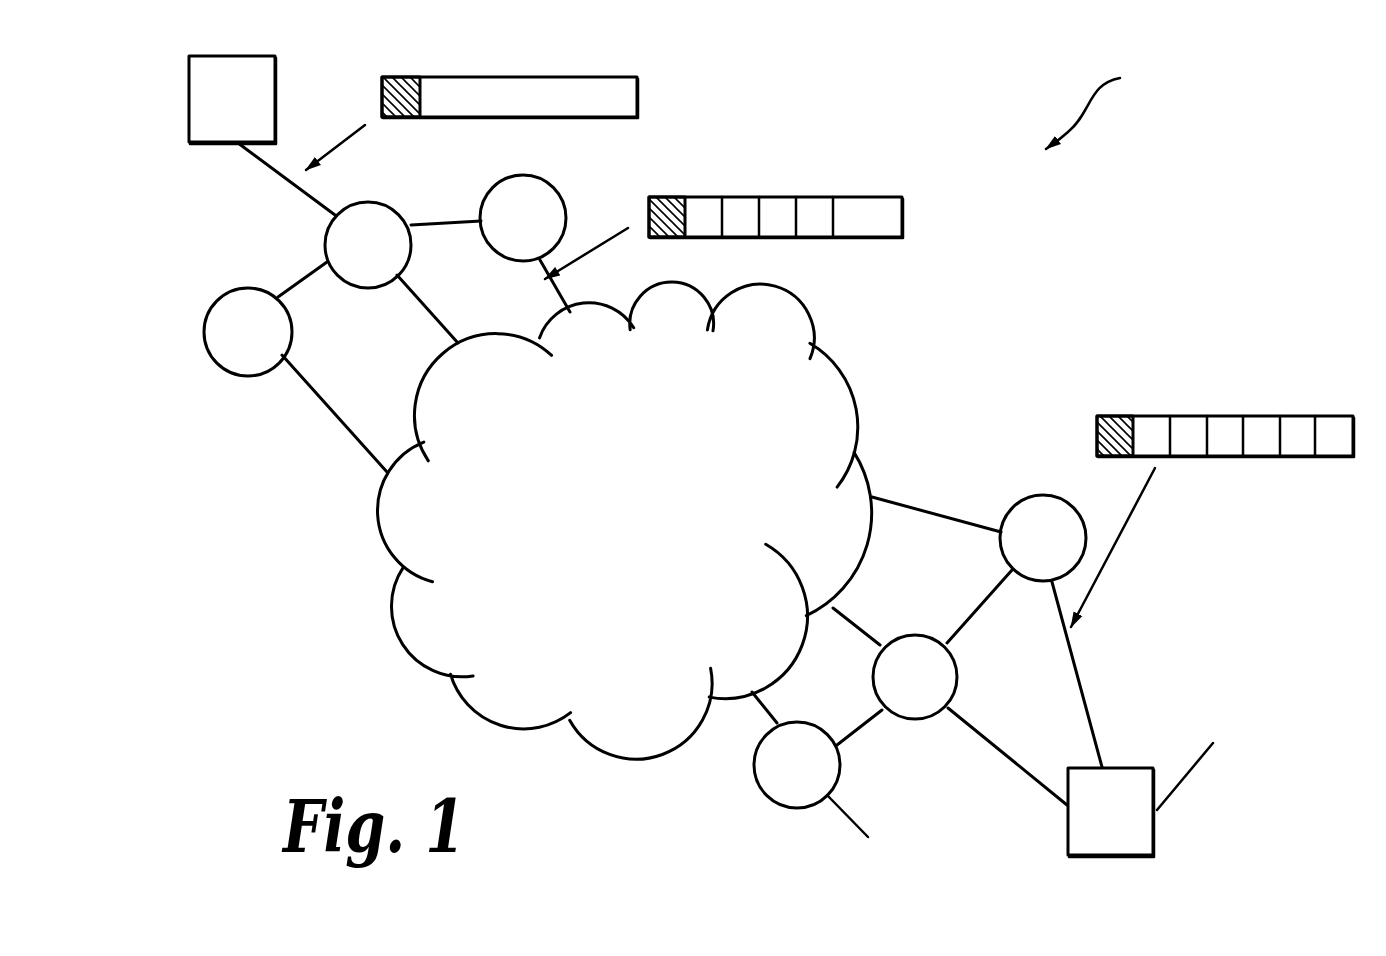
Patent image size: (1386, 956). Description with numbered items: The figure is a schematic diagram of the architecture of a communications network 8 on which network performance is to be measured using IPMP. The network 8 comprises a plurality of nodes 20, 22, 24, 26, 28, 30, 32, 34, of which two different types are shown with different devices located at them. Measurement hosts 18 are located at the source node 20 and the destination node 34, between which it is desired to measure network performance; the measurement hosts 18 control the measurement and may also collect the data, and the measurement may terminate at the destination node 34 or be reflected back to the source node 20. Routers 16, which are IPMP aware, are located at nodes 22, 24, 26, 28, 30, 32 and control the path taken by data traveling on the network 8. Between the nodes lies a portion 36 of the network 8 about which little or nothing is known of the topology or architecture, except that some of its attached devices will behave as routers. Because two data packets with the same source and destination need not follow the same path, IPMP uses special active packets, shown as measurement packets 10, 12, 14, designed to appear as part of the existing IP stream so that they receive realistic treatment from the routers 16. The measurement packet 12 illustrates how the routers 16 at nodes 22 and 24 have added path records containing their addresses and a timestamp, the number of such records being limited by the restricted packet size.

The communications network 8 is at (1094, 103).
The measurement packet 10 is at (592, 70).
The measurement packet 12 is at (777, 193).
The measurement packet 14 is at (1257, 416).
The router 16 is at (863, 825).
The measurement host 18 is at (1190, 762).
The source node 20 is at (212, 116).
The node 22 is at (349, 264).
The node 24 is at (504, 237).
The node 26 is at (229, 350).
The node 28 is at (1024, 557).
The node 30 is at (896, 696).
The node 32 is at (778, 784).
The destination node 34 is at (1091, 829).
The unknown portion of the network 36 is at (597, 542).